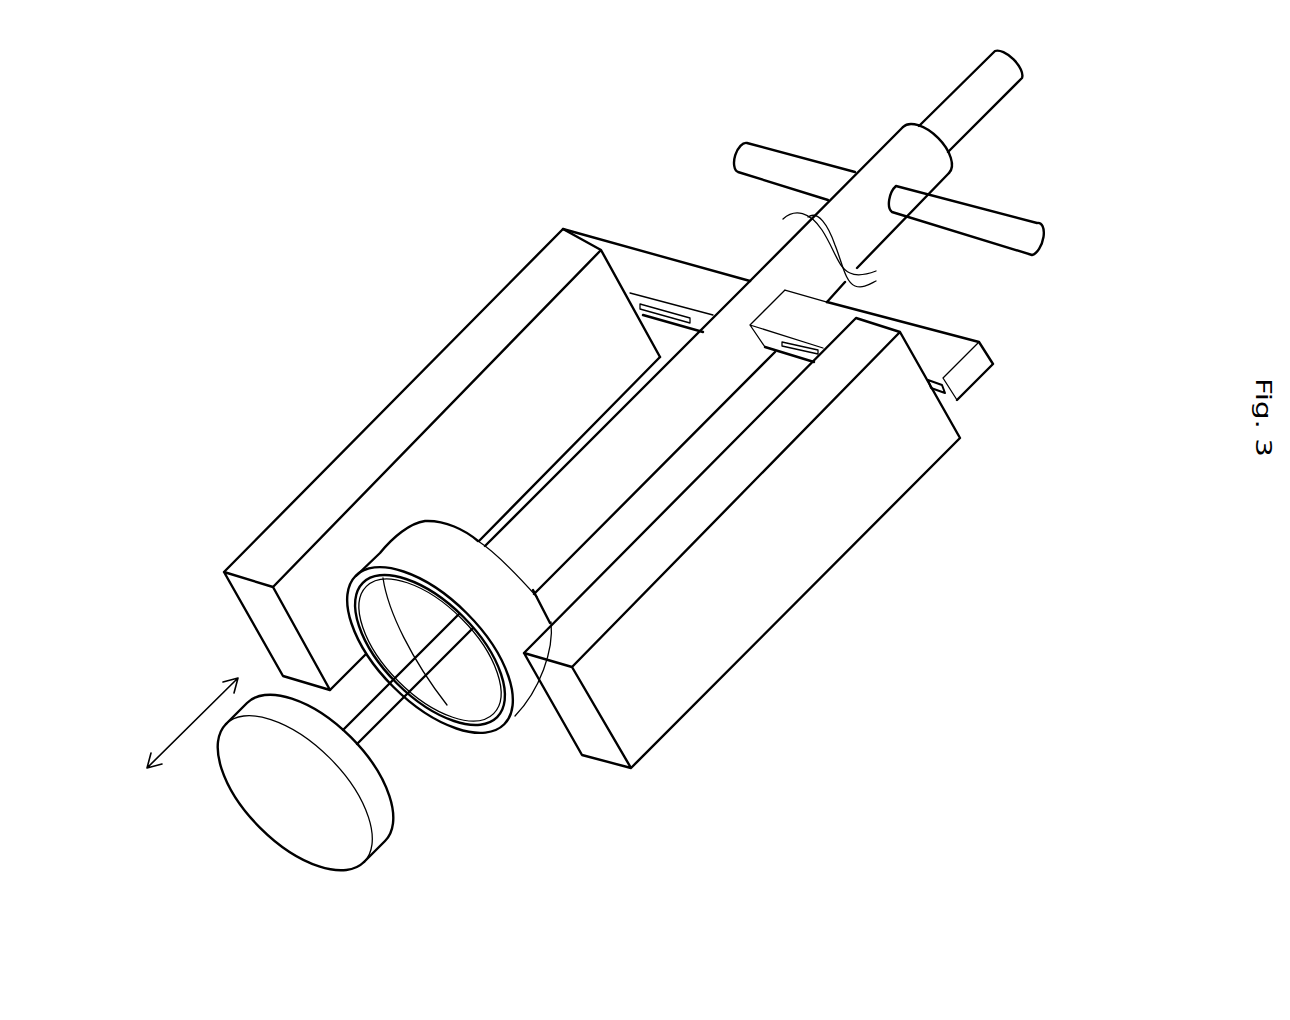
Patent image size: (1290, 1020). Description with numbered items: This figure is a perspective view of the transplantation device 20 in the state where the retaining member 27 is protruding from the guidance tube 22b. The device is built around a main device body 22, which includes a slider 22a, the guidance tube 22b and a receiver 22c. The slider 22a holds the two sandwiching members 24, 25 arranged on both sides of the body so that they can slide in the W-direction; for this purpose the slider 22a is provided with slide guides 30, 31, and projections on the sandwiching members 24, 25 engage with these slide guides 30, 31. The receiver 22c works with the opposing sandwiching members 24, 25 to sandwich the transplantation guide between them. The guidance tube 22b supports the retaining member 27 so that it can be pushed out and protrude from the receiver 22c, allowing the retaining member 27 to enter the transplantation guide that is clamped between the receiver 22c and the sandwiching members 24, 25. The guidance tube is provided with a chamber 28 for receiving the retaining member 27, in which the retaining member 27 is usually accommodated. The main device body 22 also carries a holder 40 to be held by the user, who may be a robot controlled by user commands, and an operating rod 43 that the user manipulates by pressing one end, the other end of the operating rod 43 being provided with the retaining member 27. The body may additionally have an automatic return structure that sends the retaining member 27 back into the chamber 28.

The transplantation device 20 is at (510, 178).
The main device body 22 is at (771, 247).
The slider 22a is at (642, 260).
The guidance tube 22b is at (643, 457).
The receiver 22c is at (427, 530).
The sandwiching member 24 is at (850, 508).
The sandwiching member 25 is at (478, 325).
The retaining member 27 is at (380, 838).
The chamber 28 is at (484, 705).
The slide guide 30 is at (952, 400).
The slide guide 31 is at (678, 315).
The holder 40 is at (777, 155).
The operating rod 43 is at (992, 92).